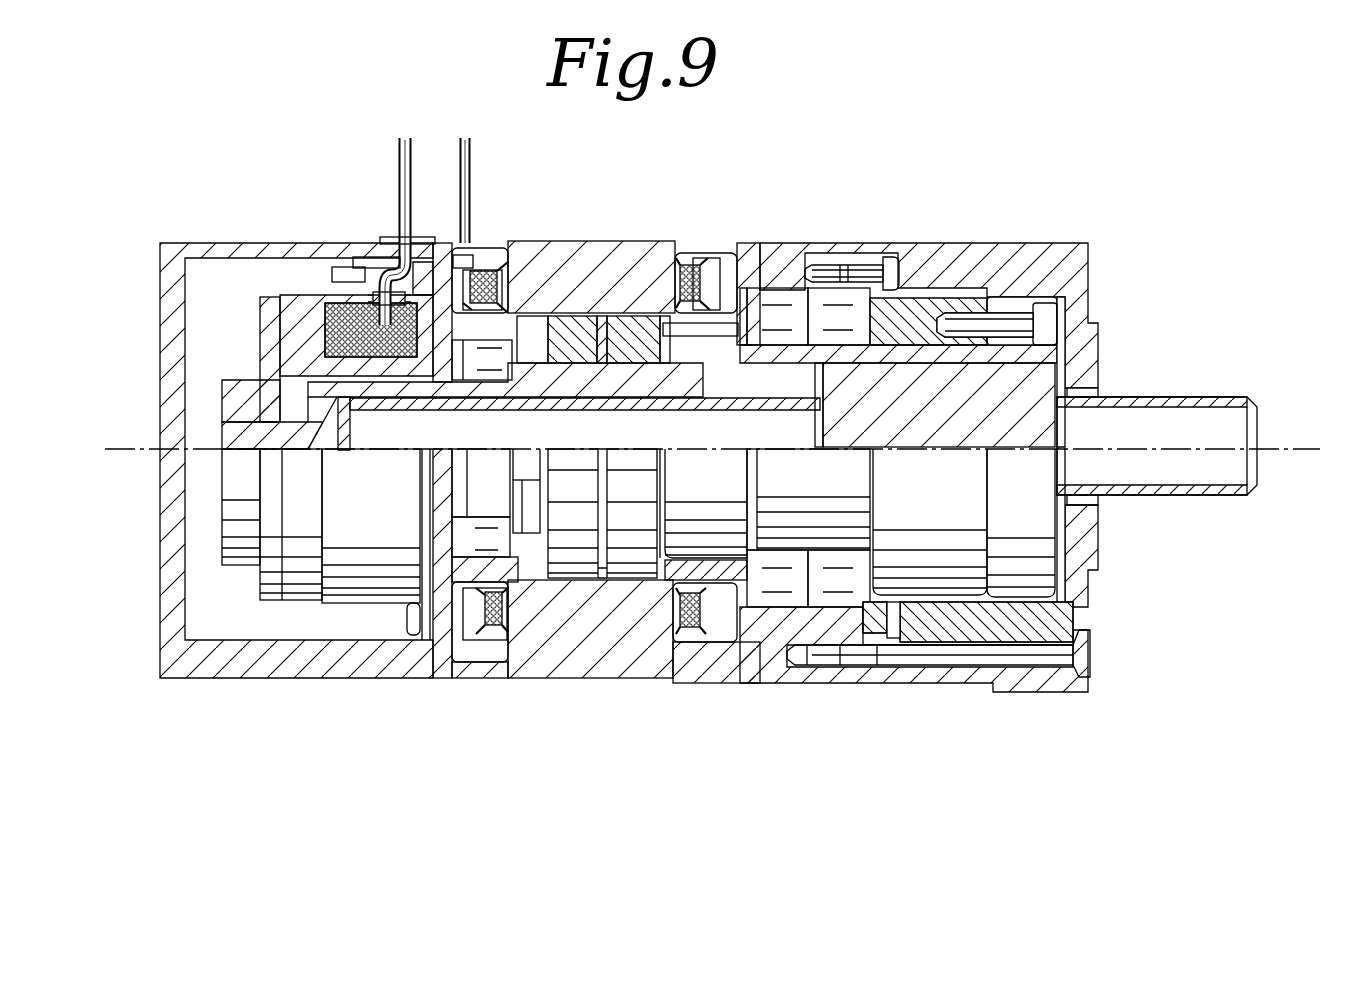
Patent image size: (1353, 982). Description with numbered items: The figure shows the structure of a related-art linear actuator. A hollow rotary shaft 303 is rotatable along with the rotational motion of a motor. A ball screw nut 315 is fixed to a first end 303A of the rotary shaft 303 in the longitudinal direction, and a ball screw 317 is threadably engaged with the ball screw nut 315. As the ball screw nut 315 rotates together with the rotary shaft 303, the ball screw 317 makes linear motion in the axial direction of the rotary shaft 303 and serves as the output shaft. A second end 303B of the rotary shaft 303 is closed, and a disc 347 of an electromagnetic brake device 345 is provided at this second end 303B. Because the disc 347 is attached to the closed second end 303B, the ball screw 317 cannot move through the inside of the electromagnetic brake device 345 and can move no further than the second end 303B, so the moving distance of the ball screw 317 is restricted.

The hollow rotary shaft 303 is at (706, 348).
The first end 303A is at (907, 343).
The second end 303B is at (337, 388).
The ball screw nut 315 is at (948, 400).
The ball screw 317 is at (1168, 494).
The electromagnetic brake device 345 is at (320, 284).
The disc 347 is at (262, 348).